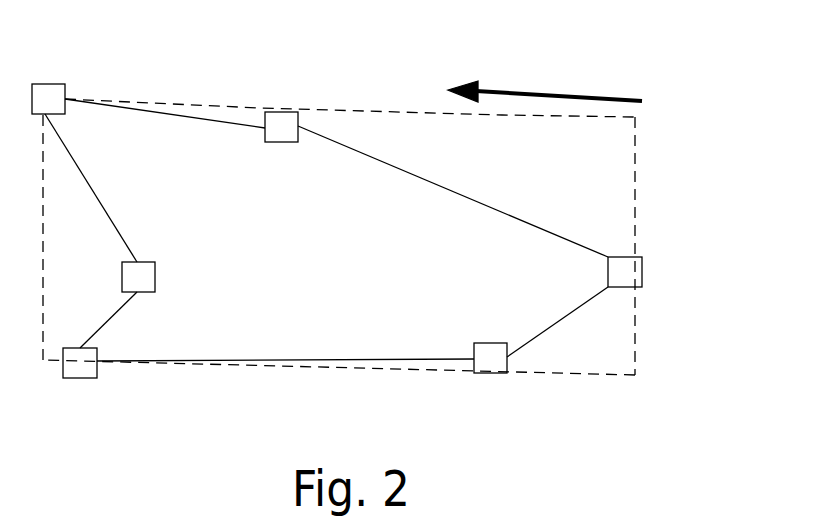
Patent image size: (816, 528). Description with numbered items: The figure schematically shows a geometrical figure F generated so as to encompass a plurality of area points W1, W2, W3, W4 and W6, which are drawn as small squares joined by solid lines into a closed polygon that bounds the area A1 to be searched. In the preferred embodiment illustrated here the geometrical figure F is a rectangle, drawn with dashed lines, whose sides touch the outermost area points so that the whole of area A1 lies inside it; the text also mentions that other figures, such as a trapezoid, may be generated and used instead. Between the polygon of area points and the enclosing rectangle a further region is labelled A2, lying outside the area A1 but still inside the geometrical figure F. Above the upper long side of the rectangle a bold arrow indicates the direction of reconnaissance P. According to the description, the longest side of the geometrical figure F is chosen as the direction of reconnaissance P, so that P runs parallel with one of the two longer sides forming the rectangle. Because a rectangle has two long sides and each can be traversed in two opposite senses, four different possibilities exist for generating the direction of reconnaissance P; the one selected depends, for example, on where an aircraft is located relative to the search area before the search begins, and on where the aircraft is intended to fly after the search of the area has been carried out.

The area point W1 is at (642, 273).
The area point W2 is at (273, 112).
The area point W3 is at (53, 84).
The area point W4 is at (155, 275).
The area point W6 is at (78, 378).
The area A1 is at (326, 230).
The area A2 is at (453, 191).
The direction of reconnaissance P is at (550, 84).
The geometrical figure F is at (622, 376).